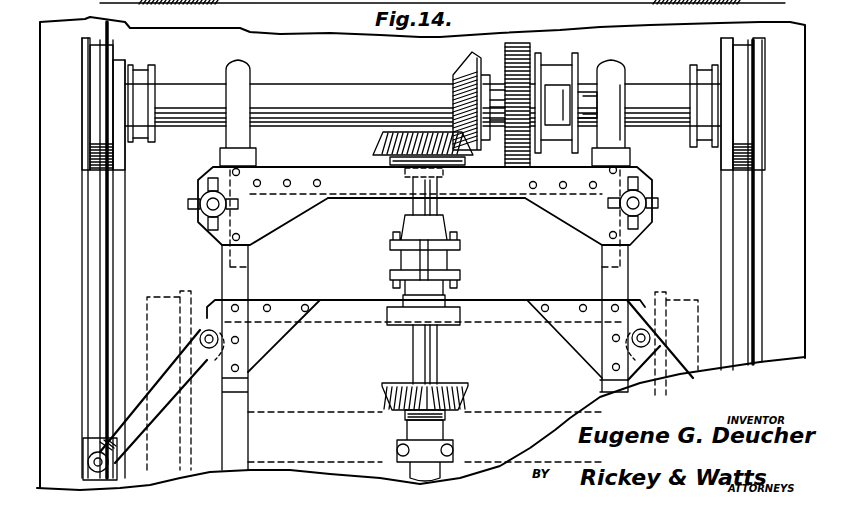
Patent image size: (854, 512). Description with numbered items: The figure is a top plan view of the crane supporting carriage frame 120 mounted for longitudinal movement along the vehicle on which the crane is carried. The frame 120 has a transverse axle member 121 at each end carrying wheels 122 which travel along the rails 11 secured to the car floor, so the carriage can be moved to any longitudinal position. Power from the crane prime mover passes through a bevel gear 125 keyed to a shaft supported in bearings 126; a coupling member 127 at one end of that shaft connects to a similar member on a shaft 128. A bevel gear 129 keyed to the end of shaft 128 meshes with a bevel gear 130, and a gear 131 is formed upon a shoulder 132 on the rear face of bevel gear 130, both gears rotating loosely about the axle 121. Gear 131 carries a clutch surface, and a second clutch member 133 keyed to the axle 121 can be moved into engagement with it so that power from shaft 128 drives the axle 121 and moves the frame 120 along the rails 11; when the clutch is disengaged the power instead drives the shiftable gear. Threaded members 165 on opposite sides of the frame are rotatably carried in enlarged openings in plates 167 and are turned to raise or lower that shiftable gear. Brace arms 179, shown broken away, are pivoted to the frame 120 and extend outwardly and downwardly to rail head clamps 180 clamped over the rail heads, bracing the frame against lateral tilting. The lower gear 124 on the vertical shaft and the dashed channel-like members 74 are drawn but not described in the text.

The rails 11 is at (100, 241).
The channel member 74 is at (163, 300).
The crane supporting carriage frame 120 is at (240, 286).
The transverse axle member 121 is at (315, 97).
The wheels 122 is at (97, 58).
The lower bevel gear 124 is at (465, 396).
The bevel gear 125 is at (437, 355).
The bearings 126 is at (395, 180).
The coupling member 127 is at (460, 250).
The shaft 128 is at (437, 210).
The bevel gear 129 is at (380, 147).
The bevel gear 130 is at (458, 73).
The gear 131 is at (518, 44).
The shoulder 132 is at (492, 135).
The clutch member 133 is at (556, 78).
The threaded member 165 is at (205, 198).
The plate 167 is at (200, 222).
The brace arms 179 is at (172, 372).
The rail head clamps 180 is at (95, 448).